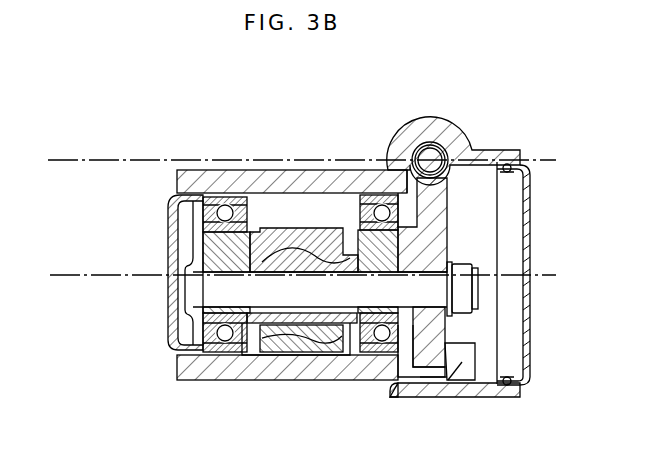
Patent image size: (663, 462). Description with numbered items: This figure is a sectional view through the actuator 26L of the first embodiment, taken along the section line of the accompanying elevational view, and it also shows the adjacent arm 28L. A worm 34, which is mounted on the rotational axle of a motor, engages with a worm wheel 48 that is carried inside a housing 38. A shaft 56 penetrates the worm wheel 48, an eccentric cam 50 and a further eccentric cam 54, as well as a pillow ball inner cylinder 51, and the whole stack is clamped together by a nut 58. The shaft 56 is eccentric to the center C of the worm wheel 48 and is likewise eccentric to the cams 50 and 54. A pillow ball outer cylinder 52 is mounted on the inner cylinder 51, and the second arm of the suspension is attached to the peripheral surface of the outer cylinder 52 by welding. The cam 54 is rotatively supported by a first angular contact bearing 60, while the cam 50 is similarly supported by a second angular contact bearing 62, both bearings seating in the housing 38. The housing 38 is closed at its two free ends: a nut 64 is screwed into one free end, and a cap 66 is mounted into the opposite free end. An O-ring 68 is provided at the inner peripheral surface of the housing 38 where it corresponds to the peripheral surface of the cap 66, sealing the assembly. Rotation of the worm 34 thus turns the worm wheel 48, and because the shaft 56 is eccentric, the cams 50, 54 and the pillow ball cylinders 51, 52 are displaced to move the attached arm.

The center of the worm wheel C is at (118, 275).
The actuator 26L is at (192, 116).
The left suspension arm flange 28L is at (450, 381).
The worm 34 is at (422, 145).
The housing 38 is at (452, 140).
The worm wheel 48 is at (393, 394).
The eccentric cam 50 is at (363, 205).
The pillow ball inner cylinder 51 is at (291, 231).
The pillow ball outer cylinder 52 is at (328, 228).
The eccentric cam 54 is at (266, 232).
The shaft 56 is at (185, 290).
The nut 58 is at (458, 263).
The first angular contact bearing 60 is at (252, 196).
The second angular contact bearing 62 is at (362, 186).
The nut 64 is at (168, 212).
The cap 66 is at (528, 370).
The O-ring 68 is at (511, 388).